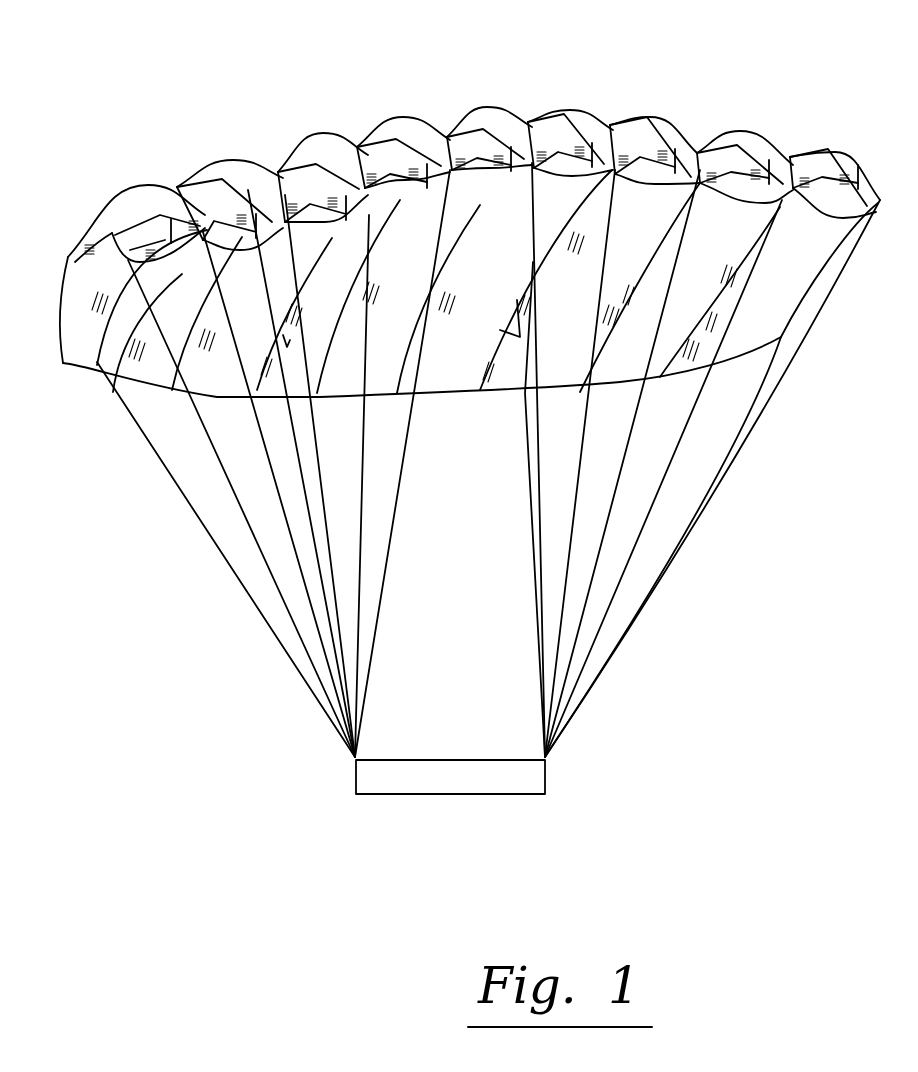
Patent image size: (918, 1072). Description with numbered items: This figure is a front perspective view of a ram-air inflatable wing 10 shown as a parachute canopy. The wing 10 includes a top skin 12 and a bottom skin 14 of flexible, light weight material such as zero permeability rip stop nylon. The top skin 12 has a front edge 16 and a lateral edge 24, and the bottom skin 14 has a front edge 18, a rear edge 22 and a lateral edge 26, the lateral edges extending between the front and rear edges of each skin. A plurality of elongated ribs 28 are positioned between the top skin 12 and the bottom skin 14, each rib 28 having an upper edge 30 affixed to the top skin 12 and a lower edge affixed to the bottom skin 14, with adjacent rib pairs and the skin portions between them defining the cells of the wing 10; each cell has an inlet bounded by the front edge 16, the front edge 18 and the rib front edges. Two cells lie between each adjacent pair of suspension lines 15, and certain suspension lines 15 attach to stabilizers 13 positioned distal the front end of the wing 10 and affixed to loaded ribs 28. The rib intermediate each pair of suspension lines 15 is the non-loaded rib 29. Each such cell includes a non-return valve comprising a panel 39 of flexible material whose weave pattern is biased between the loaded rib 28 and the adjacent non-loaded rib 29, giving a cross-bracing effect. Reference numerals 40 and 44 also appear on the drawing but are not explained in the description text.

The ram-air inflatable wing 10 is at (783, 451).
The top skin 12 is at (140, 187).
The stabilizer 13 is at (80, 347).
The bottom skin 14 is at (150, 377).
The suspension line 15 is at (250, 600).
The front edge of top skin 16 is at (120, 198).
The front edge of bottom skin 18 is at (258, 192).
The rear edge of bottom skin 22 is at (215, 402).
The lateral edge of top skin 24 is at (880, 197).
The lateral edge of bottom skin 26 is at (93, 273).
The rib 28 is at (177, 187).
The non-loaded rib 29 is at (180, 183).
The upper edge of rib 30 is at (171, 270).
The panel 39 is at (300, 160).
The vertical brace 40 is at (254, 240).
The reinforcement tape 44 is at (247, 223).